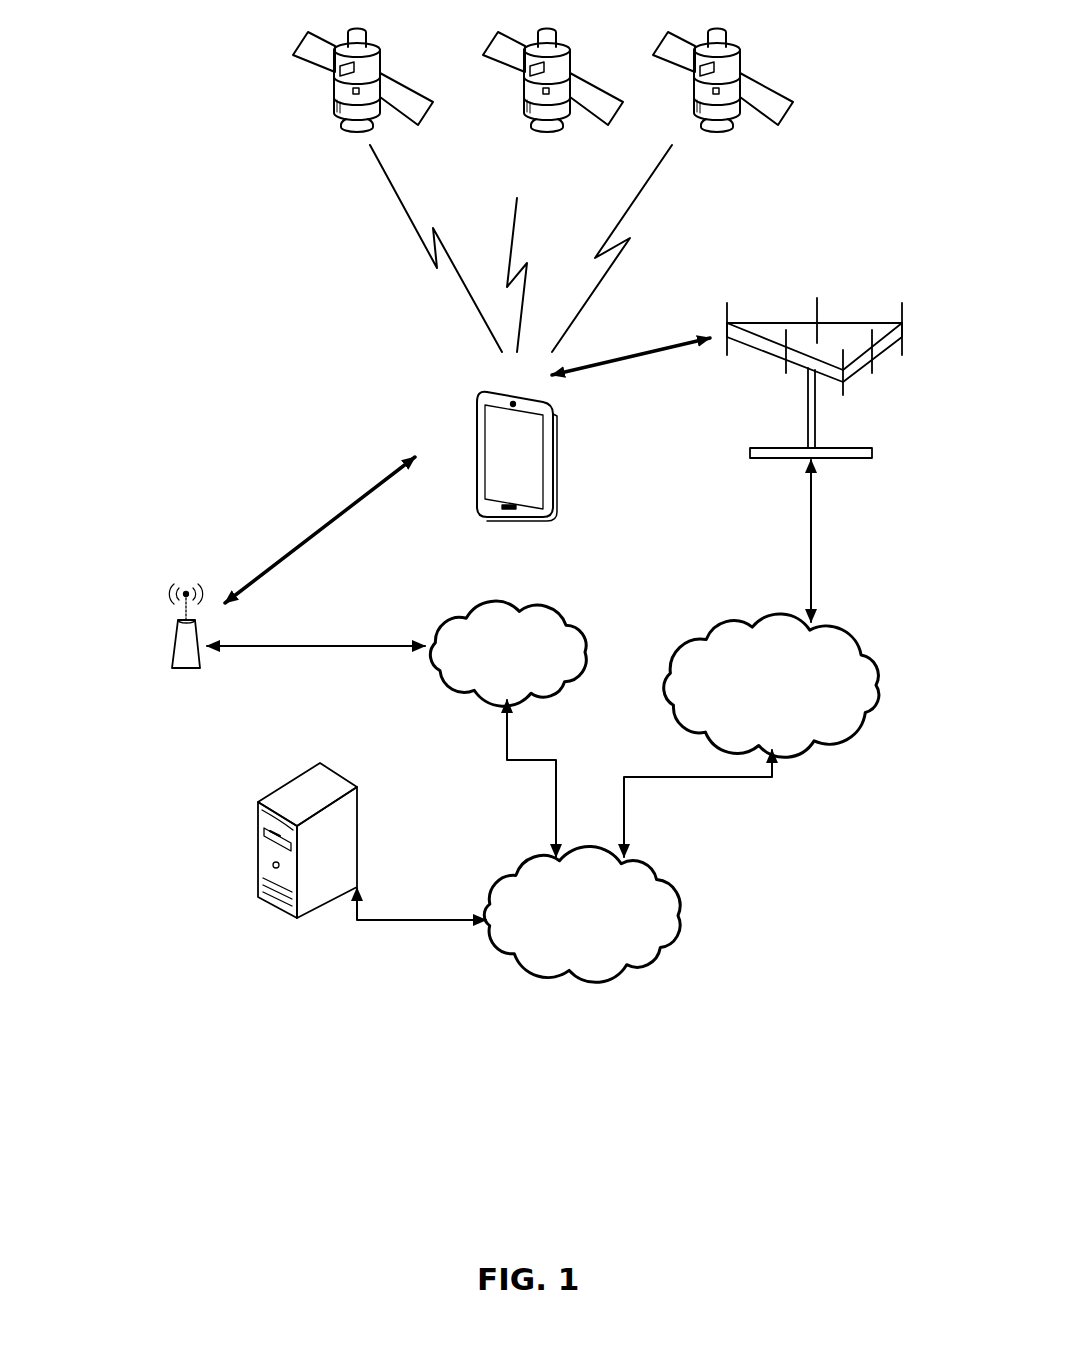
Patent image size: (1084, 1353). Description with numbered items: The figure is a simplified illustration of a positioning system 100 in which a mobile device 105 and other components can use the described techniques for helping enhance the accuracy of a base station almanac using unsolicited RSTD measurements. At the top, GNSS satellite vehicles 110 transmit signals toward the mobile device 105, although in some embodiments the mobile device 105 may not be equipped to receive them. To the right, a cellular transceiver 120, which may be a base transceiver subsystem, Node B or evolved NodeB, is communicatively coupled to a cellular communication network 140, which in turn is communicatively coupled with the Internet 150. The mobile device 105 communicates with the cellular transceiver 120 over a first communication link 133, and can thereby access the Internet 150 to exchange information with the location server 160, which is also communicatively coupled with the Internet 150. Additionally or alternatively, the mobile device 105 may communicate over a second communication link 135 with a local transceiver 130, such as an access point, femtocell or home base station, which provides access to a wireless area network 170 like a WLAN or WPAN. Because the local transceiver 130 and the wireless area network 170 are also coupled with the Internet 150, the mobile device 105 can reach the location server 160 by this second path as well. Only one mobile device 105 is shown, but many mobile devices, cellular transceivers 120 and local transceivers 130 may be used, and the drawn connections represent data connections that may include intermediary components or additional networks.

The positioning system 100 is at (203, 1114).
The mobile device 105 is at (484, 392).
The GNSS satellite vehicles 110 is at (276, 86).
The cellular transceiver 120 is at (845, 458).
The local transceiver 130 is at (194, 668).
The first communication link 133 is at (624, 362).
The second communication link 135 is at (323, 528).
The cellular communication network 140 is at (860, 650).
The Internet 150 is at (683, 925).
The location server 160 is at (334, 778).
The wireless area network (WAN) 170 is at (570, 690).